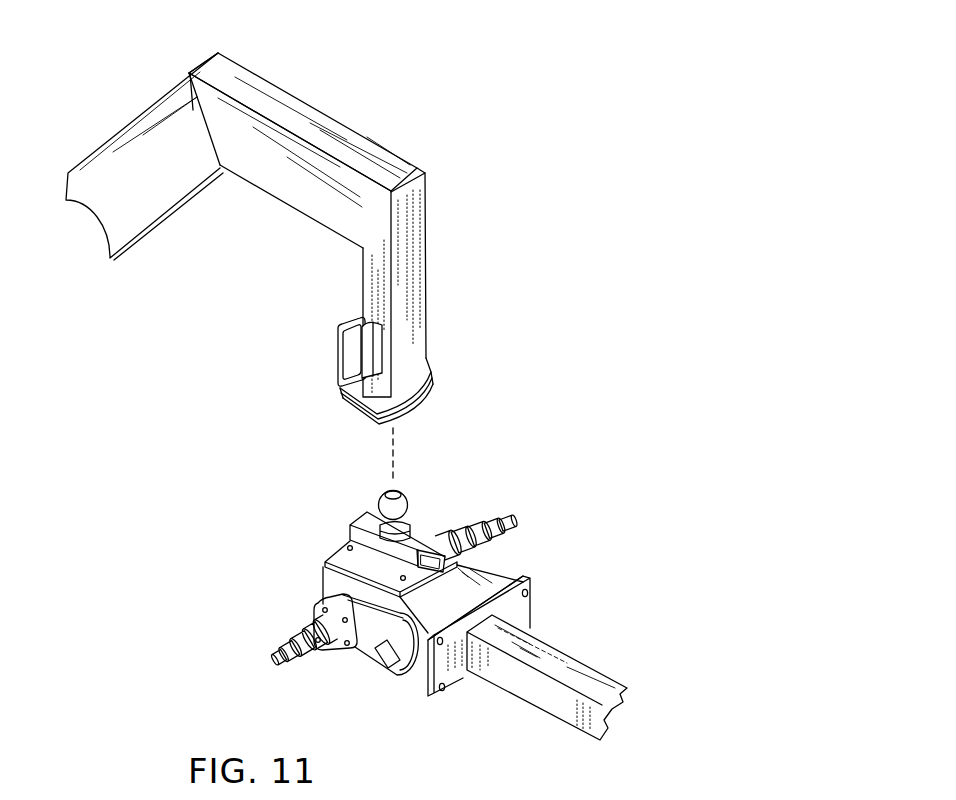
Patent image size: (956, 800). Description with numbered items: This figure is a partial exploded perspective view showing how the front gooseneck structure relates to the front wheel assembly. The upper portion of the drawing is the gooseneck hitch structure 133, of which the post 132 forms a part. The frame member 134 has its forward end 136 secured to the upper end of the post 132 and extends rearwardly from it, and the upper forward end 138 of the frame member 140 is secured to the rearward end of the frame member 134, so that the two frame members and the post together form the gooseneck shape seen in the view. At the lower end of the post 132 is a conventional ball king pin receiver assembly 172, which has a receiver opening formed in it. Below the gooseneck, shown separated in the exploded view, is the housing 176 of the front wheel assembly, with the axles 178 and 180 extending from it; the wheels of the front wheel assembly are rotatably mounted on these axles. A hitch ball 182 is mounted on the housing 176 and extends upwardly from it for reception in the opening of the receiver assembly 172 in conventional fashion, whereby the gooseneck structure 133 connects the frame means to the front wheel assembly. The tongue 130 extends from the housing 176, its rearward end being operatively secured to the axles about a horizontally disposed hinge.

The tongue 130 is at (568, 667).
The post 132 is at (418, 273).
The gooseneck hitch structure 133 is at (403, 149).
The frame member 134 is at (350, 140).
The forward end 136 is at (413, 177).
The upper forward end 138 is at (220, 70).
The frame member 140 is at (133, 138).
The ball king pin receiver assembly 172 is at (452, 378).
The housing 176 is at (568, 563).
The axle 178 is at (267, 660).
The axle 180 is at (510, 515).
The hitch ball 182 is at (407, 506).